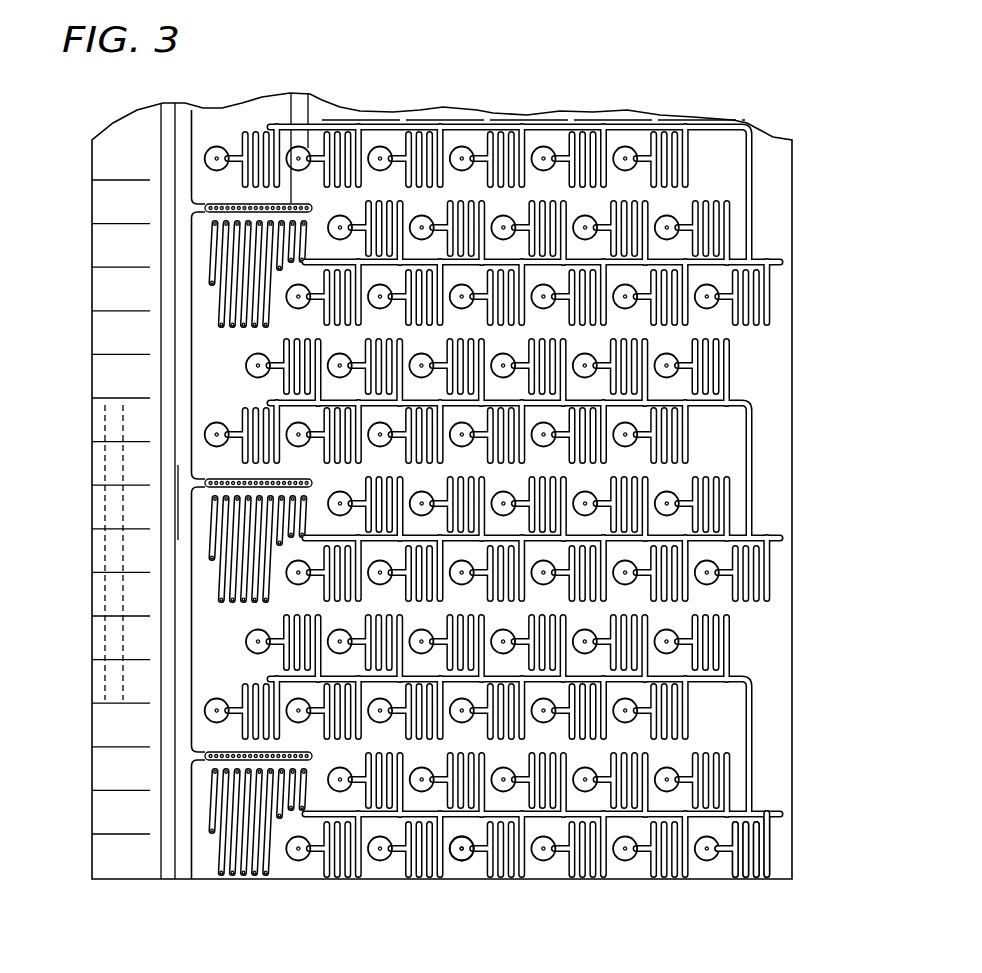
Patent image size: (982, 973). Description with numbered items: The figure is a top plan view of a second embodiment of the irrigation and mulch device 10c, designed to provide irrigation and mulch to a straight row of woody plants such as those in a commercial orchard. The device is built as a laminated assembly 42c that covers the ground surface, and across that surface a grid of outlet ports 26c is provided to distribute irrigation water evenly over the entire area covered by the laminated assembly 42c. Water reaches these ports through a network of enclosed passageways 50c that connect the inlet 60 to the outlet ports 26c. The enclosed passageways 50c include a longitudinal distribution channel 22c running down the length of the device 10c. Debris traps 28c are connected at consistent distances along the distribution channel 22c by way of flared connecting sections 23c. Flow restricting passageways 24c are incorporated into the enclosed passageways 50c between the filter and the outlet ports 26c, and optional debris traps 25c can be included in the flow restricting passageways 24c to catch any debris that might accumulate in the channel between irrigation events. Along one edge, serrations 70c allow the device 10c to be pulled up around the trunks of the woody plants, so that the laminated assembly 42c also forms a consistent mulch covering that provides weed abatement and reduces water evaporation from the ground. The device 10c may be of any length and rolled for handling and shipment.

The irrigation and mulch device 10c is at (604, 884).
The longitudinal distribution channel 22c is at (183, 868).
The flared connecting sections 23c is at (203, 478).
The flow restricting passageways 24c is at (265, 872).
The debris traps 25c is at (216, 782).
The outlet ports 26c is at (468, 862).
The debris traps 28c is at (216, 752).
The laminated assembly 42c is at (770, 632).
The network of enclosed passageways 50c is at (712, 862).
The inlet 60 is at (175, 880).
The serrations 70c is at (126, 620).